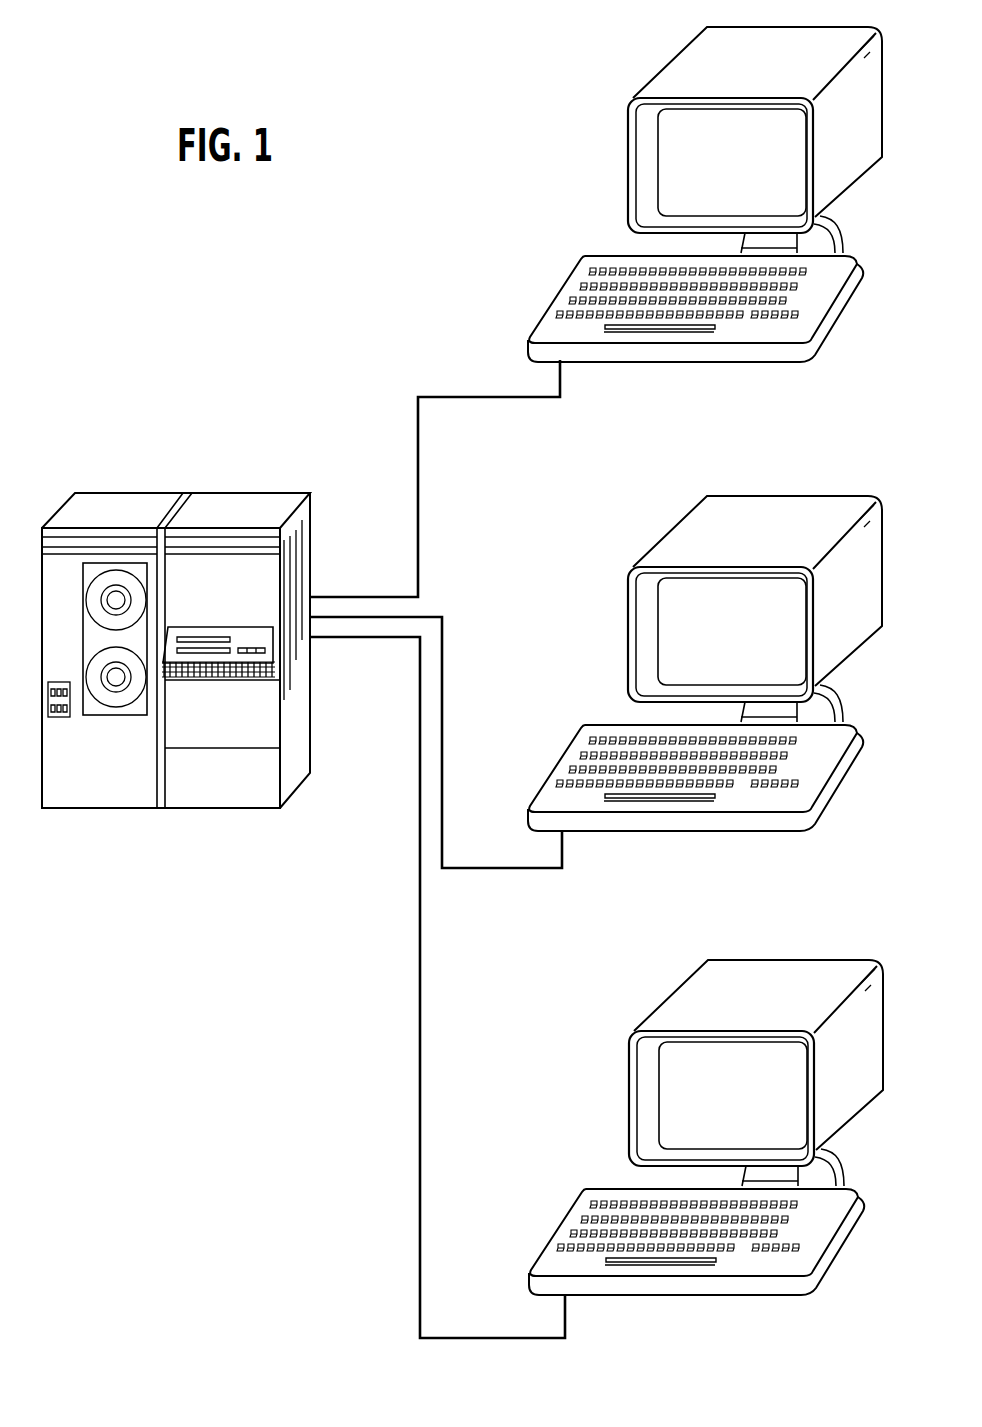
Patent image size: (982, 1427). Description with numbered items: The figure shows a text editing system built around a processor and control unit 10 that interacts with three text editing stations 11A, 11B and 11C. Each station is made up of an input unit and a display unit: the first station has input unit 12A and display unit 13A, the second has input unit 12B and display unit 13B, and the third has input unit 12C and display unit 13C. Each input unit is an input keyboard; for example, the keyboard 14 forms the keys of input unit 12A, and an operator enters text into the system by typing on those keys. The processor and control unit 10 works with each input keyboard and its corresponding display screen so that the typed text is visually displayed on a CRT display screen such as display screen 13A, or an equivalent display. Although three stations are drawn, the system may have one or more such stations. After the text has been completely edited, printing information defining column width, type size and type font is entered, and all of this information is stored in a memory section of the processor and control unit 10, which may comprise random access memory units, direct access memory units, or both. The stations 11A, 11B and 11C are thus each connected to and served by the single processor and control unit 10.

The processor and control unit 10 is at (176, 678).
The text editing station 11A is at (705, 210).
The text editing station 11B is at (705, 689).
The text editing station 11C is at (706, 1145).
The input unit 12A is at (695, 325).
The input unit 12B is at (695, 803).
The input unit 12C is at (696, 1260).
The display unit 13A is at (752, 166).
The display unit 13B is at (732, 631).
The display unit 13C is at (733, 1095).
The keyboard 14 is at (727, 330).